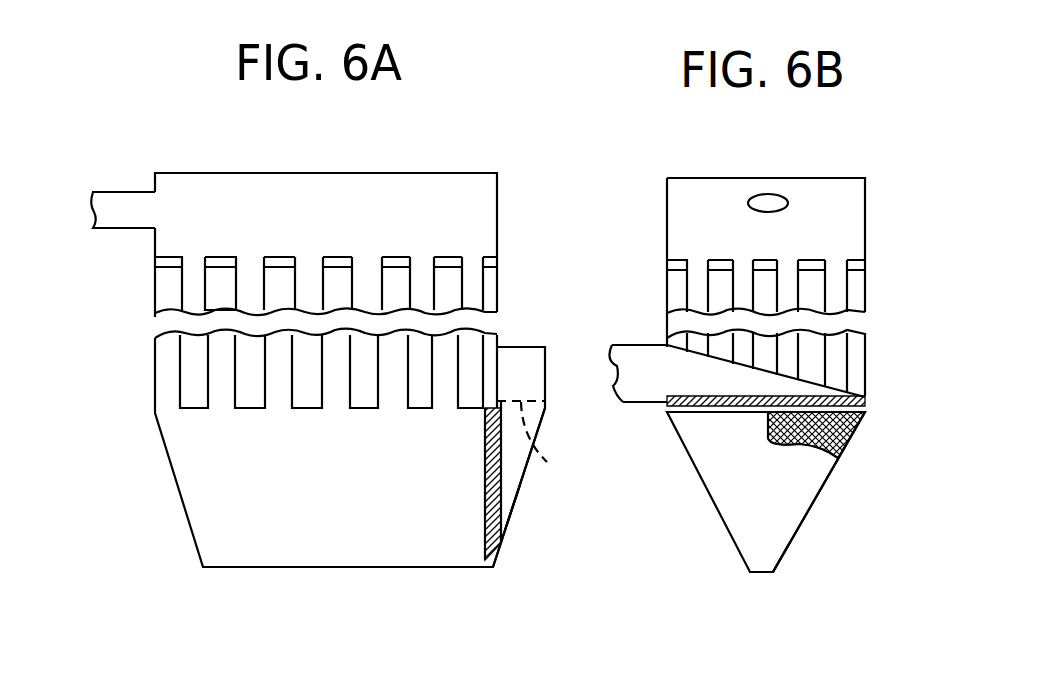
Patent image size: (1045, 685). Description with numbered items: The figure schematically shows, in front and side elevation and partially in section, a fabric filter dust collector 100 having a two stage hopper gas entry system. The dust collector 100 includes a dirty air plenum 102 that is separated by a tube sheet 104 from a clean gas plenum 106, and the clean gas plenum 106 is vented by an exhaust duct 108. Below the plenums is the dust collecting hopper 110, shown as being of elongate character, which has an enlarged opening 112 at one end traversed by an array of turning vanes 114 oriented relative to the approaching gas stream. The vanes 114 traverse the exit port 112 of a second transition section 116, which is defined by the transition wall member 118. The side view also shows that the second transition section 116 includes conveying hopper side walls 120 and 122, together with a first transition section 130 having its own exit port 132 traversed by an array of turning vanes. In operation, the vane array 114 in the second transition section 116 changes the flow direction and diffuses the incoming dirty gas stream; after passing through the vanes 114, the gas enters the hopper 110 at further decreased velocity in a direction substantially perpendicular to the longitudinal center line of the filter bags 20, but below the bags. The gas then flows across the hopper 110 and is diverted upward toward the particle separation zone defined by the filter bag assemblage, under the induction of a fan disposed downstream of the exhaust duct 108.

In FIG. 6A, the filter bags 20 is at (160, 293).
In FIG. 6B, the filter bags 20 is at (683, 290).
In FIG. 6A, the fabric filter dust collector 100 is at (512, 207).
In FIG. 6B, the fabric filter dust collector 100 is at (650, 234).
In FIG. 6A, the dirty air plenum 102 is at (160, 380).
In FIG. 6B, the dirty air plenum 102 is at (678, 327).
In FIG. 6A, the tube sheet 104 is at (170, 257).
In FIG. 6B, the tube sheet 104 is at (672, 257).
In FIG. 6A, the clean gas plenum 106 is at (480, 190).
In FIG. 6B, the clean gas plenum 106 is at (672, 192).
In FIG. 6A, the exhaust duct 108 is at (118, 193).
In FIG. 6B, the exhaust duct 108 is at (790, 198).
In FIG. 6A, the dust collecting hopper 110 is at (195, 510).
In FIG. 6B, the dust collecting hopper 110 is at (675, 437).
In FIG. 6A, the enlarged opening 112 is at (460, 457).
In FIG. 6A, the turning vanes 114 is at (487, 508).
In FIG. 6B, the turning vanes 114 is at (845, 452).
In FIG. 6A, the second transition section 116 is at (528, 501).
In FIG. 6B, the second transition section 116 is at (818, 565).
In FIG. 6A, the transition wall member 118 is at (510, 518).
In FIG. 6A, the conveying hopper side wall 120 is at (313, 533).
In FIG. 6B, the conveying hopper side wall 120 is at (717, 513).
In FIG. 6B, the conveying hopper side wall 122 is at (808, 513).
In FIG. 6B, the first transition section 130 is at (728, 373).
In FIG. 6A, the exit port 132 is at (540, 451).
In FIG. 6B, the exit port 132 is at (697, 395).